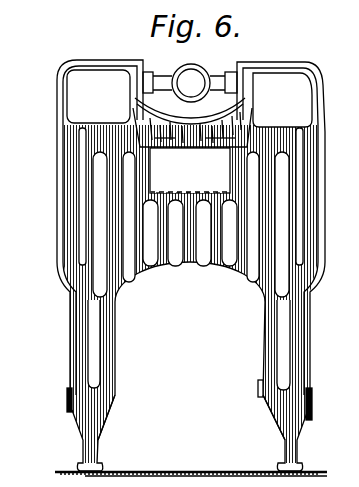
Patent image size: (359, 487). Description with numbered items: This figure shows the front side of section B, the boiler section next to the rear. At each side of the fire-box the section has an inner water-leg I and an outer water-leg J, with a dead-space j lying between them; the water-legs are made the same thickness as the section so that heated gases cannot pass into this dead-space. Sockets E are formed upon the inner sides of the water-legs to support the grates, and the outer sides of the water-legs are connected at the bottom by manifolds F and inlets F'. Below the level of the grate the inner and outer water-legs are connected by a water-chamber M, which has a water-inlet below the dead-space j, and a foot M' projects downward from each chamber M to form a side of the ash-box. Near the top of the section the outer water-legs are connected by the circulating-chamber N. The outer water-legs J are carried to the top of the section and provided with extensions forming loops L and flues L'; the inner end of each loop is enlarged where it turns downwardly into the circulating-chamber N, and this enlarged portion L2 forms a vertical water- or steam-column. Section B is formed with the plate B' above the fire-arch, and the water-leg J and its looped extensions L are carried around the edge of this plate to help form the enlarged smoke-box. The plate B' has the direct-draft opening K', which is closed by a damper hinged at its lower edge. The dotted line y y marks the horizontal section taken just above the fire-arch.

The loop L is at (100, 80).
The flue L' is at (98, 96).
The enlarged portion of the loop L2 is at (258, 91).
The plate B' is at (199, 275).
The circulating-chamber N is at (177, 136).
The direct-draft opening K' is at (190, 207).
The section line y is at (65, 190).
The outer water-leg J is at (317, 250).
The dead-space j is at (97, 360).
The inner water-leg I is at (270, 343).
The inlet F' is at (172, 404).
The water-chamber M is at (76, 433).
The foot M' is at (296, 433).
The socket E is at (348, 379).
The manifold F is at (346, 30).